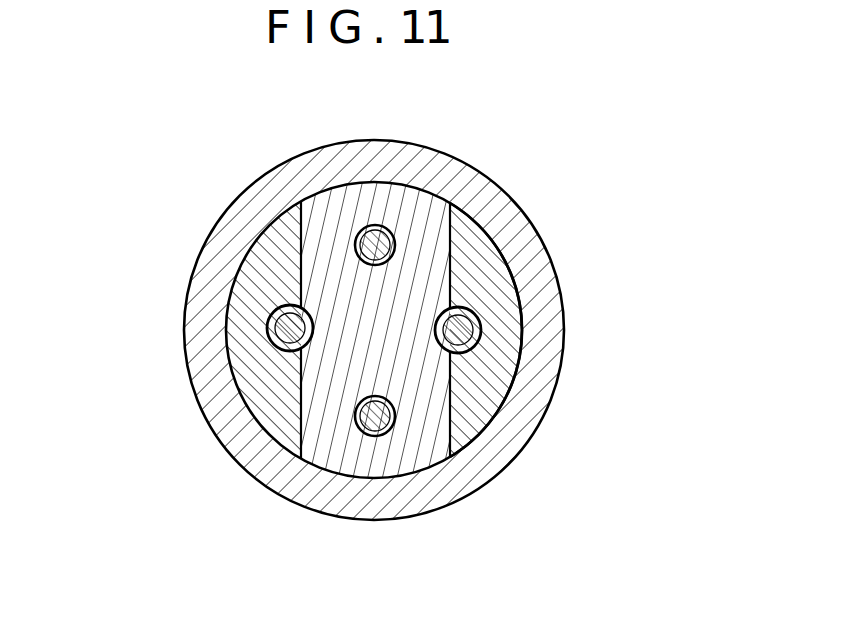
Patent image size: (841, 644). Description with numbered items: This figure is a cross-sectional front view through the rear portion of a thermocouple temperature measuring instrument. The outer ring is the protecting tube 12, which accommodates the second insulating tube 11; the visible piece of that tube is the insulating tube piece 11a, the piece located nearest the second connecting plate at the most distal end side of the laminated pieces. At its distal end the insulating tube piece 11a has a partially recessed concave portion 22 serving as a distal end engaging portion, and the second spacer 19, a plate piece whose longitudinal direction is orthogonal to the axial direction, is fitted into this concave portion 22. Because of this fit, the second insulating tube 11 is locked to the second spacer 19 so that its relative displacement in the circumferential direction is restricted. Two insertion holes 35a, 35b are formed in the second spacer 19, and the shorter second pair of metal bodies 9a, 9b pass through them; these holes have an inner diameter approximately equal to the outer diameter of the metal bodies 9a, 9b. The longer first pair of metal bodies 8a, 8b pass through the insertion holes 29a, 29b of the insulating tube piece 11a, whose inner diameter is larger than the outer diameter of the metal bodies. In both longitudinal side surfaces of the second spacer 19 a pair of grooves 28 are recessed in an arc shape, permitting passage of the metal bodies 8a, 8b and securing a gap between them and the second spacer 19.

The second insulating tube 11 is at (513, 408).
The insulating tube piece 11a is at (478, 253).
The protecting tube 12 is at (560, 267).
The second spacer 19 is at (410, 183).
The concave portion 22 is at (450, 246).
The grooves 28 is at (240, 415).
The insertion hole 29a is at (480, 322).
The insertion hole 29b is at (267, 321).
The first metal body 8a is at (472, 338).
The first metal body 8b is at (270, 345).
The second metal body 9a is at (366, 237).
The second metal body 9b is at (358, 421).
The insertion hole 35a is at (360, 241).
The insertion hole 35b is at (386, 430).